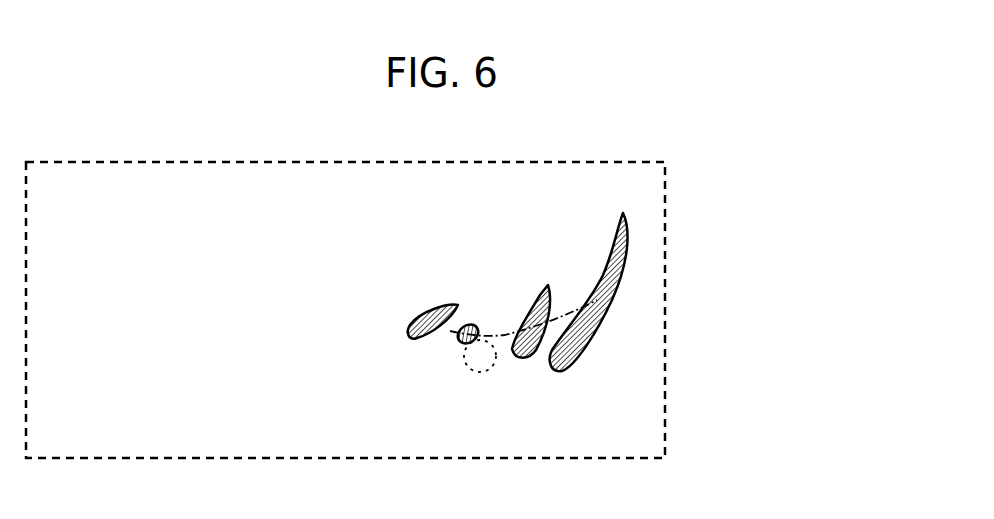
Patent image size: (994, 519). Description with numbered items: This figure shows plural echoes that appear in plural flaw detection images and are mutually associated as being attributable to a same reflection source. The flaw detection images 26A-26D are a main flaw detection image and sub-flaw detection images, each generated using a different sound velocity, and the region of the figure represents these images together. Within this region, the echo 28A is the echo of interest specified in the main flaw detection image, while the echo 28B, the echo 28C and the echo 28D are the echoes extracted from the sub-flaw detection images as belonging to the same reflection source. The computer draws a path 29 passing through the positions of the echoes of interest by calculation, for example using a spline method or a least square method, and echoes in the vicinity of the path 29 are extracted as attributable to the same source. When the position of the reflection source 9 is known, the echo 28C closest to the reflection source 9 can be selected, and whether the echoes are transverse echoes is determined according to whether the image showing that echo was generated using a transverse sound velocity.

The main flaw detection image and sub-flaw detection images 26A-26D is at (665, 257).
The echo 28A is at (563, 373).
The echo 28B is at (518, 358).
The echo 28C is at (460, 346).
The echo 28D is at (411, 337).
The path 29 is at (588, 305).
The reflection source 9 is at (493, 353).